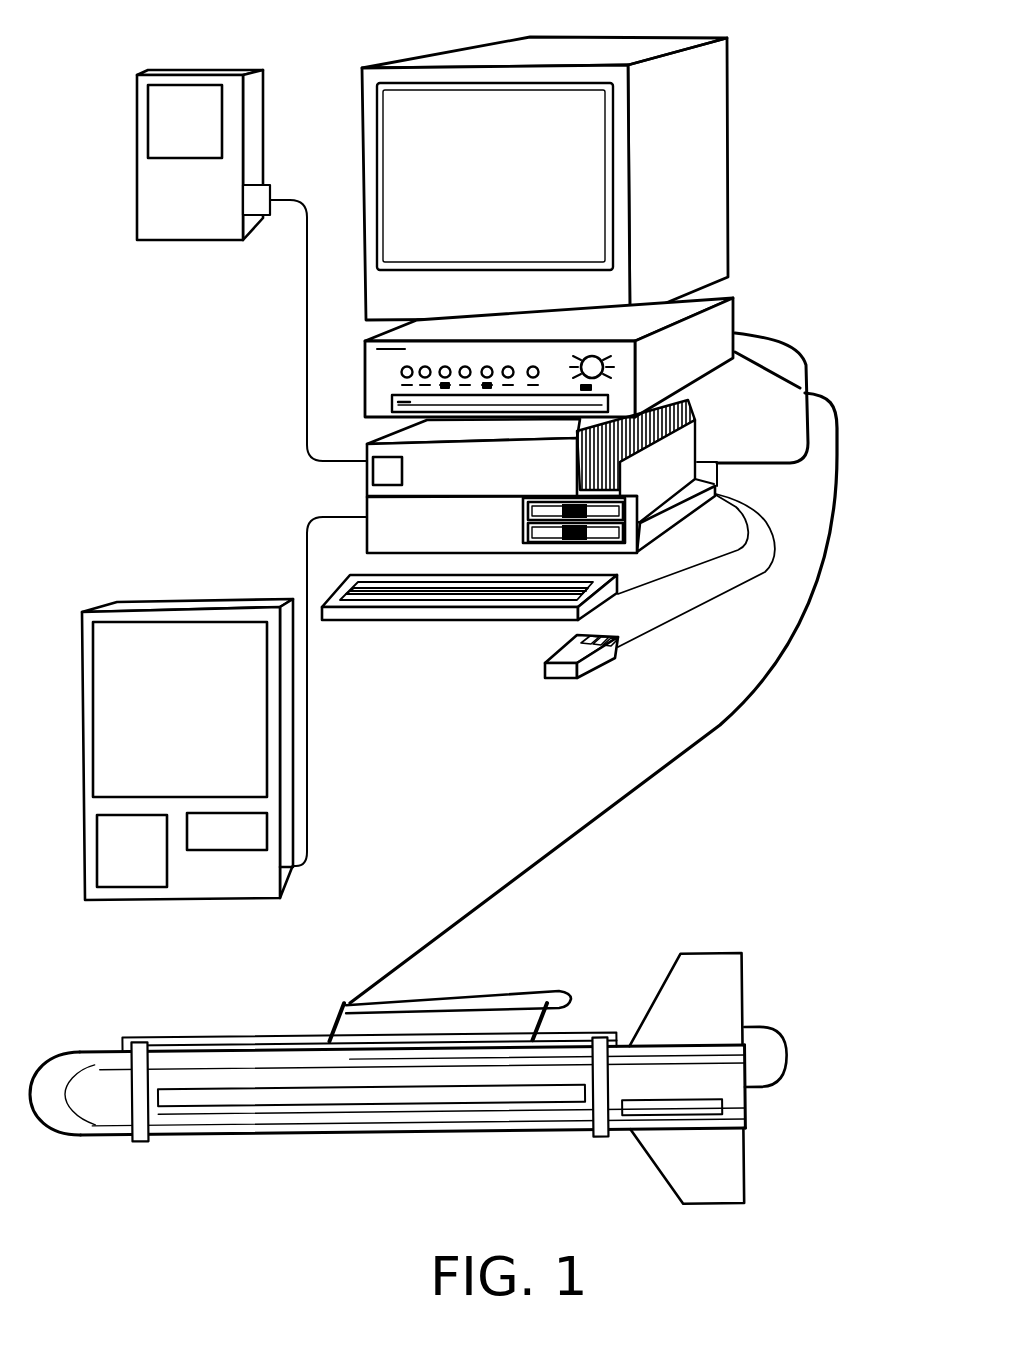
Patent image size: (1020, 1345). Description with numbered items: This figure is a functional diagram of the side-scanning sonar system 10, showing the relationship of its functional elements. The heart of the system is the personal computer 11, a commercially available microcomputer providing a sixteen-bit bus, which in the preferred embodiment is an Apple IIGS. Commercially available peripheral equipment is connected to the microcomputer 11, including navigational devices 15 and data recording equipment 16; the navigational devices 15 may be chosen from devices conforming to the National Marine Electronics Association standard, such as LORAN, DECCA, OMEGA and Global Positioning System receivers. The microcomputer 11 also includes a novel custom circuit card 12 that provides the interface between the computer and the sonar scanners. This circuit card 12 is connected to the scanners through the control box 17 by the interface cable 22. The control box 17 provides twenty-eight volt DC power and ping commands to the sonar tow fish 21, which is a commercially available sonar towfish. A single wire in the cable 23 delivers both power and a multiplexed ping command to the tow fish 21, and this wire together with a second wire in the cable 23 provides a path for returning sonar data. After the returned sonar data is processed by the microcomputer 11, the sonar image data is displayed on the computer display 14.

The side-scanning sonar system 10 is at (186, 330).
The personal computer 11 is at (524, 476).
The circuit card 12 is at (695, 448).
The computer display 14 is at (730, 145).
The navigational devices 15 is at (220, 72).
The data recording equipment 16 is at (142, 610).
The control box 17 is at (735, 303).
The sonar tow fish 21 is at (267, 1138).
The interface cable 22 is at (762, 342).
The cable 23 is at (585, 832).